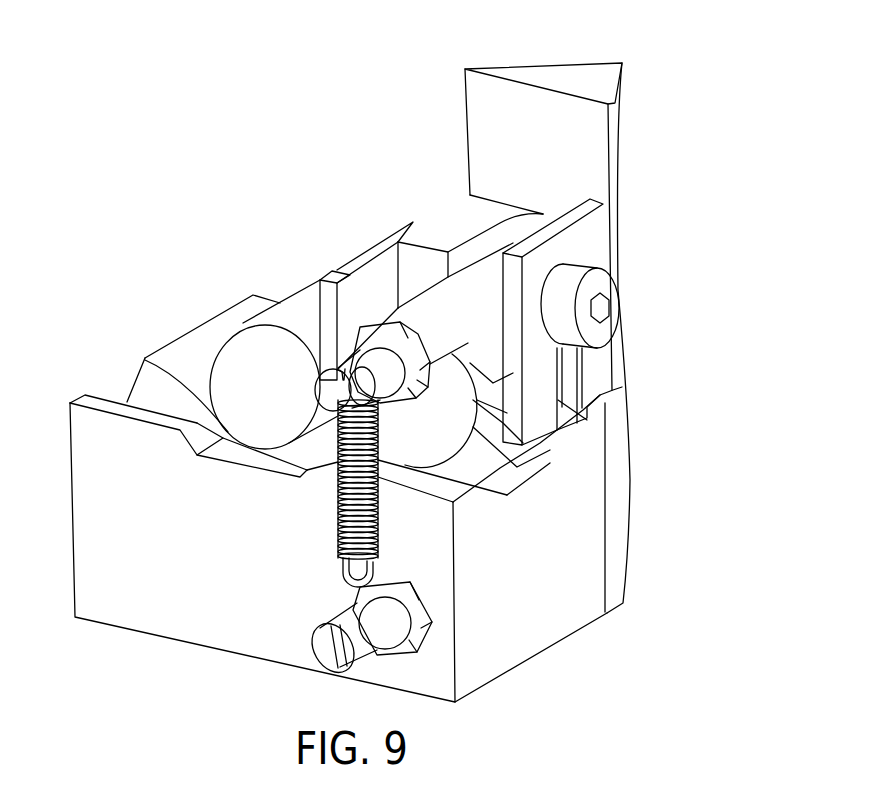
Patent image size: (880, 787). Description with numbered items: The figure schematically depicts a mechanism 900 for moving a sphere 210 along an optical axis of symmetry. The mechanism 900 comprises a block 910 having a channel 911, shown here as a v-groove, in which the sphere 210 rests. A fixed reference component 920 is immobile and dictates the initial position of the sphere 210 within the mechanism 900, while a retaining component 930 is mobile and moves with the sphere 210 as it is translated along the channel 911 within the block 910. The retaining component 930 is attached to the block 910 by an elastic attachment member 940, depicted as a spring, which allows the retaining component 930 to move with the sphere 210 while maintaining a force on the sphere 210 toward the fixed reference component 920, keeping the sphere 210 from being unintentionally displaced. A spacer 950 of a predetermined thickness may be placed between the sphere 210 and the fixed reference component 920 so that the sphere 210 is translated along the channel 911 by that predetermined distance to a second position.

The mechanism 900 is at (662, 82).
The block 910 is at (205, 590).
The channel 911 is at (177, 392).
The fixed reference component 920 is at (283, 290).
The retaining component 930 is at (470, 352).
The elastic attachment member 940 is at (380, 517).
The spacer 950 is at (387, 236).
The sphere 210 is at (470, 457).